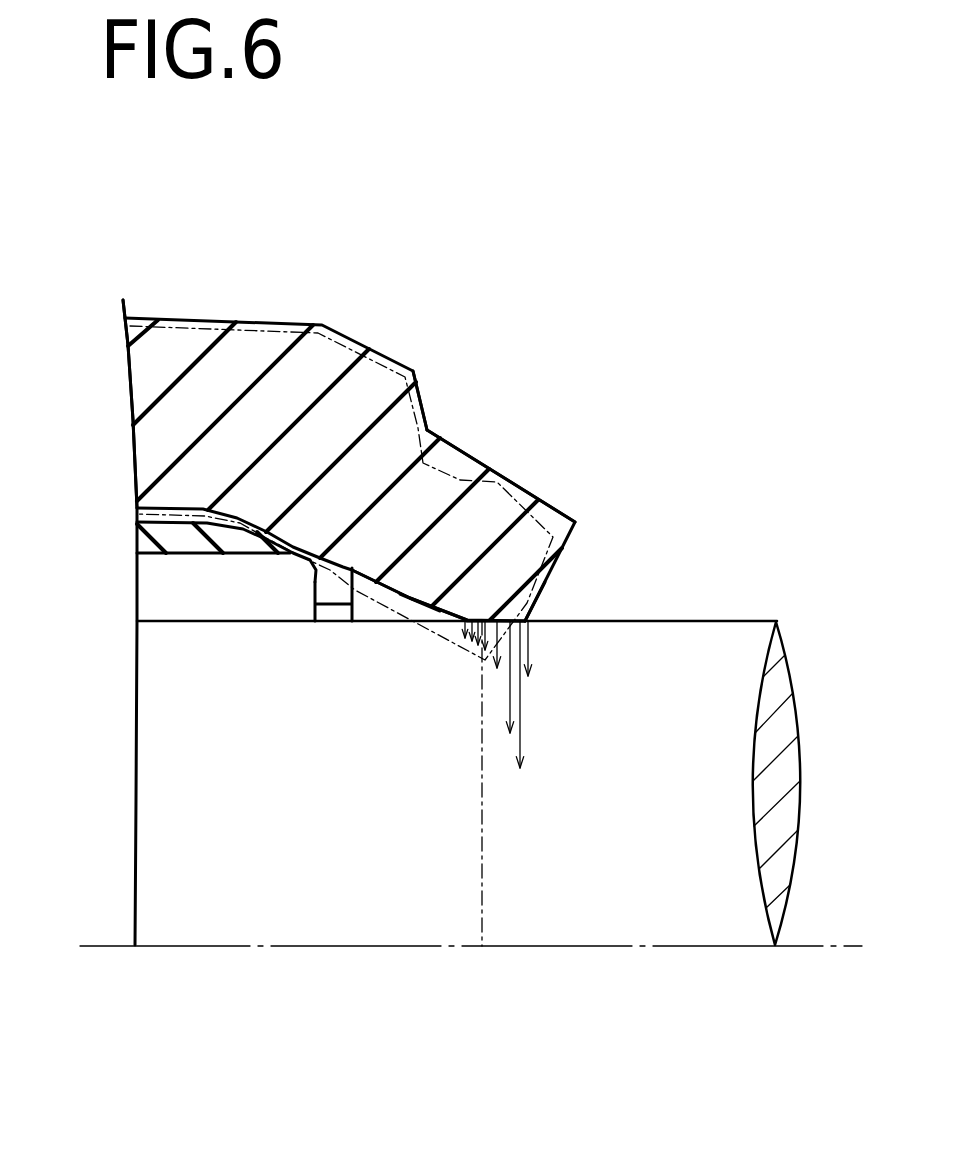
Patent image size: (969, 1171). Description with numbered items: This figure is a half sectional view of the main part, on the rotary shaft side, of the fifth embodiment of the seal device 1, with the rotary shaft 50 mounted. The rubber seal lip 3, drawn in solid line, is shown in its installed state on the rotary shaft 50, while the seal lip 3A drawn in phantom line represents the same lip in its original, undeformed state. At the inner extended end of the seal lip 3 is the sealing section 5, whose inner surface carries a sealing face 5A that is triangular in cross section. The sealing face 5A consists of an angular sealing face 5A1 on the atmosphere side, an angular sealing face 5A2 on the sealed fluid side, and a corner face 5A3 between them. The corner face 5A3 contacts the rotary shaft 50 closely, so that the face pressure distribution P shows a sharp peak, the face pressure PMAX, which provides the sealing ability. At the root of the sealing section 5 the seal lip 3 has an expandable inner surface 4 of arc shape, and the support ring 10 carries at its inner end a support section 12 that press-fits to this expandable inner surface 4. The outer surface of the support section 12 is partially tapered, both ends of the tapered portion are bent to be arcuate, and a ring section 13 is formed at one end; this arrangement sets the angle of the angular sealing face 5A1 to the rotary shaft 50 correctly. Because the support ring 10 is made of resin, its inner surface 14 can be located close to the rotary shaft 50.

The seal device 1 is at (443, 557).
The seal lip 3 is at (260, 324).
The seal lip 3A is at (450, 458).
The expandable inner surface 4 is at (312, 580).
The sealing section 5 is at (477, 520).
The sealing face 5A is at (395, 592).
The angular sealing face 5A1 is at (420, 620).
The angular sealing face 5A2 is at (536, 605).
The corner face 5A3 is at (492, 622).
The support ring 10 is at (190, 557).
The support section 12 is at (310, 562).
The ring section 13 is at (417, 450).
The inner surface 14 is at (330, 615).
The rotary shaft 50 is at (670, 618).
The face pressure distribution P is at (538, 660).
The sharp face pressure PMAX is at (536, 725).